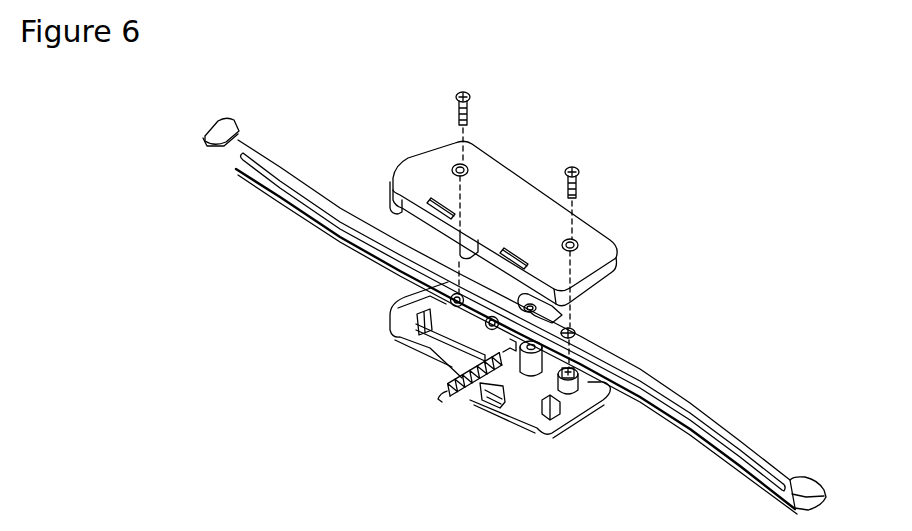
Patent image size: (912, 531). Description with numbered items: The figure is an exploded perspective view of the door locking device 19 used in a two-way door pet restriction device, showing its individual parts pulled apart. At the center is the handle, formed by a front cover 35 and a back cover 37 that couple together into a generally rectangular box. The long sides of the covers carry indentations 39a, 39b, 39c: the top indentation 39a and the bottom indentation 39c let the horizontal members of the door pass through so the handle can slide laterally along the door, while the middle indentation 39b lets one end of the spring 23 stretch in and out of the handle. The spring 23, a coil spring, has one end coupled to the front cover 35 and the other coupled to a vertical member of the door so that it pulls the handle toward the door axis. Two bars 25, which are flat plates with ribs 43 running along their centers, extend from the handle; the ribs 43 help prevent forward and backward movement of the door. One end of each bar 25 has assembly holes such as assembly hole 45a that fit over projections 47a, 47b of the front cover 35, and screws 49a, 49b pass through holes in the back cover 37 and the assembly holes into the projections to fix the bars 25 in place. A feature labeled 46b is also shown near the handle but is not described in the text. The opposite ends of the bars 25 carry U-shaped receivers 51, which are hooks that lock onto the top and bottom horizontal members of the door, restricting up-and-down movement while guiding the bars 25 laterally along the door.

The door locking device 19 is at (630, 98).
The spring 23 is at (450, 385).
The bars 25 is at (263, 187).
The front cover 35 is at (432, 360).
The back cover 37 is at (500, 167).
The top indentation 39a is at (392, 210).
The middle indentation 39b is at (460, 262).
The bottom indentation 39c is at (583, 322).
The ribs 43 is at (262, 167).
The assembly hole 45a is at (575, 333).
The lug 46b is at (573, 318).
The projection 47a is at (403, 302).
The projection 47b is at (497, 400).
The screw 49a is at (583, 174).
The screw 49b is at (465, 90).
The U-shaped receivers 51 is at (236, 124).